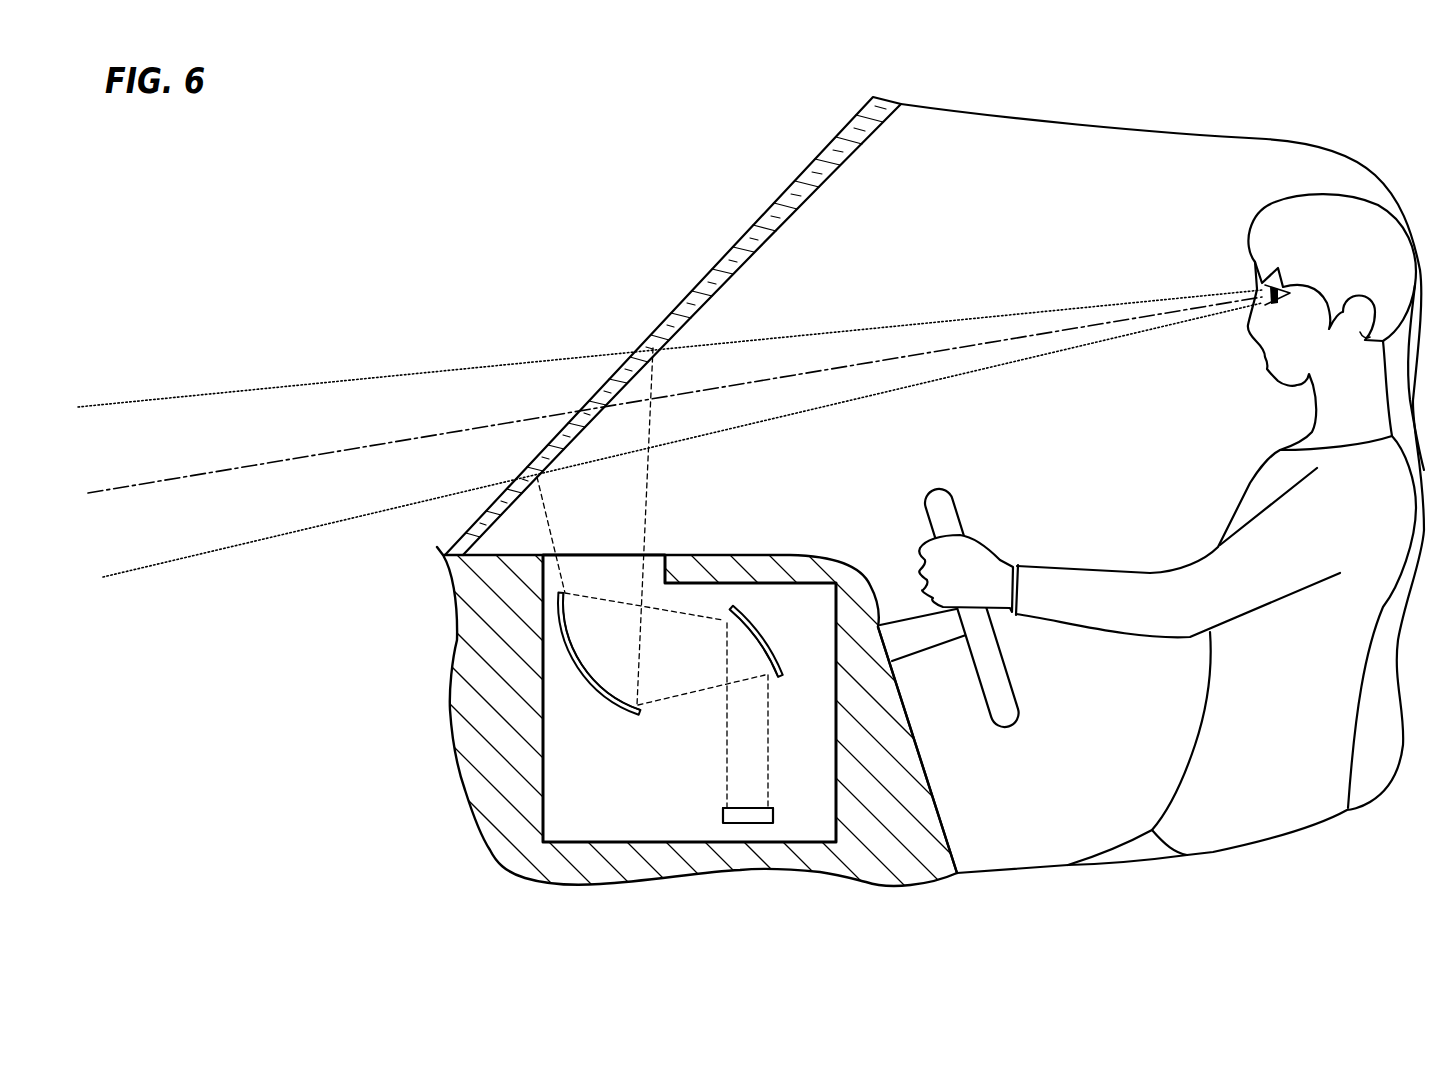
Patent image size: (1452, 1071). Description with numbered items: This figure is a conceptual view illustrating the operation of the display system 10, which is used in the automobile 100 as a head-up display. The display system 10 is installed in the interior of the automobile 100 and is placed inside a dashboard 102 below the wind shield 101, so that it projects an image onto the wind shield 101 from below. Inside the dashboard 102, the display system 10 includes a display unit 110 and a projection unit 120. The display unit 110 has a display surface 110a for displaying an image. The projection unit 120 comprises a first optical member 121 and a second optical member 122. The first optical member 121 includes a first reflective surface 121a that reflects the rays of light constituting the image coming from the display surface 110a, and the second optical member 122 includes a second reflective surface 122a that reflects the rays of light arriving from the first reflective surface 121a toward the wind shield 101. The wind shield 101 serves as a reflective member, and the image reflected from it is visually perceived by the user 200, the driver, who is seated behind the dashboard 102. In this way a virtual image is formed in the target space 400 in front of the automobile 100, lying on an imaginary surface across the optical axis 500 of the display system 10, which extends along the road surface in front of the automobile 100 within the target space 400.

The display system 10 is at (686, 632).
The automobile 100 is at (641, 720).
The wind shield 101 is at (791, 193).
The dashboard 102 is at (931, 809).
The display unit 110 is at (775, 792).
The display surface 110a is at (745, 803).
The projection unit 120 is at (679, 698).
The first optical member 121 is at (735, 684).
The first reflective surface 121a is at (737, 658).
The second optical member 122 is at (599, 678).
The second reflective surface 122a is at (590, 670).
The user 200 is at (1284, 221).
The target space 400 is at (193, 395).
The optical axis 500 is at (142, 483).